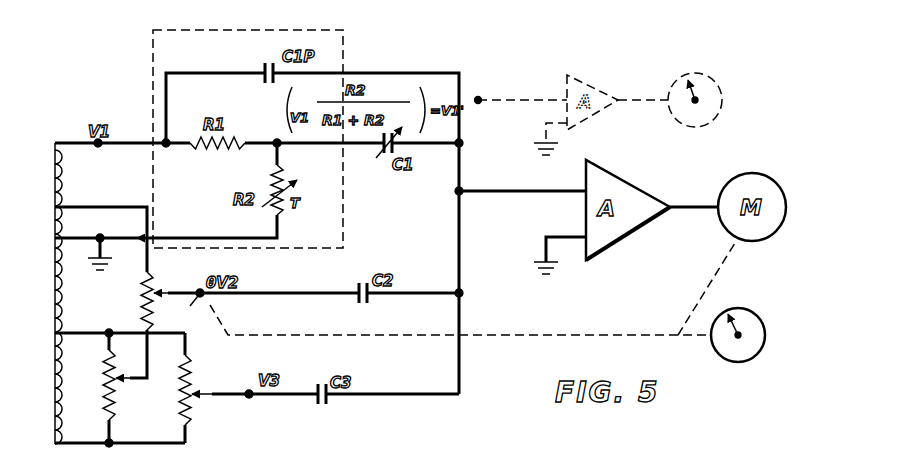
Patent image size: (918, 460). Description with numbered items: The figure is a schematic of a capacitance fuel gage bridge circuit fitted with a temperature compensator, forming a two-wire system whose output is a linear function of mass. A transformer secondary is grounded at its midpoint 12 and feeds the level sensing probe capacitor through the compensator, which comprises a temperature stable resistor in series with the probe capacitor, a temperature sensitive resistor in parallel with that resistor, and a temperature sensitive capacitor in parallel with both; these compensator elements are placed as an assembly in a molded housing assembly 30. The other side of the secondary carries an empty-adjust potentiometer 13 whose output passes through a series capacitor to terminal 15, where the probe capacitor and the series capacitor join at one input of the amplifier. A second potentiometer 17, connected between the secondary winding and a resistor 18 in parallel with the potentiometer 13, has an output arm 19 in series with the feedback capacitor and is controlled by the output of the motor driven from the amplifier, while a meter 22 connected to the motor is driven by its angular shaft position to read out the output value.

The molded housing assembly 30 is at (325, 29).
The terminal 15 is at (462, 188).
The meter 22 is at (712, 80).
The second potentiometer 17 is at (152, 275).
The midpoint 12 is at (115, 265).
The output arm 19 is at (456, 289).
The resistor 18 is at (122, 401).
The potentiometer 13 is at (193, 412).